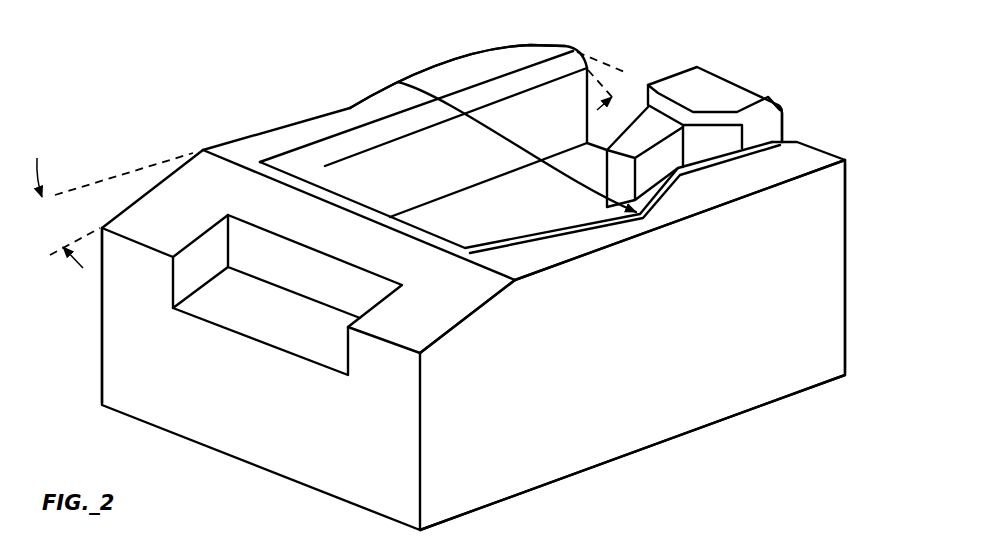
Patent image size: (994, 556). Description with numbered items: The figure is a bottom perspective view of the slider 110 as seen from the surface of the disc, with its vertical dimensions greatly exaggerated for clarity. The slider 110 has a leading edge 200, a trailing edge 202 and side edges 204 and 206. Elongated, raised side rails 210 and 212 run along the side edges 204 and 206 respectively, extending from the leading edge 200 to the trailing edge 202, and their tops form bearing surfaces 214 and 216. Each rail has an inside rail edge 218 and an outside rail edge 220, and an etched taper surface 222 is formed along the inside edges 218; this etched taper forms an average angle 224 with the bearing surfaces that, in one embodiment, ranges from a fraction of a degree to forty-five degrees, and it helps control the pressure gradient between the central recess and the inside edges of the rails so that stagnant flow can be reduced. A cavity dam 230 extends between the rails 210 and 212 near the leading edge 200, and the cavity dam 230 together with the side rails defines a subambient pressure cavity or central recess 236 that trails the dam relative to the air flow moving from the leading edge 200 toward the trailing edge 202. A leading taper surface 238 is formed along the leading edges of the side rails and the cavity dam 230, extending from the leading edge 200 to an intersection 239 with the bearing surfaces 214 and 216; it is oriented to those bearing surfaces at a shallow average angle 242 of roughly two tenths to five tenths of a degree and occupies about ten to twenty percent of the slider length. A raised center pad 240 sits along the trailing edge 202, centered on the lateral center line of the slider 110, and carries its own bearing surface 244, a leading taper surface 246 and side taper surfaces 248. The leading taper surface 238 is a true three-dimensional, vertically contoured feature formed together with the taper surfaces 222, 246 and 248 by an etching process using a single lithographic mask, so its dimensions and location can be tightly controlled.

The slider 110 is at (148, 82).
The leading edge 200 is at (300, 470).
The trailing edge 202 is at (848, 373).
The side edge 204 is at (100, 342).
The side edge 206 is at (467, 500).
The side rail 210 is at (548, 42).
The side rail 212 is at (800, 157).
The bearing surface 214 is at (308, 133).
The bearing surface 216 is at (537, 260).
The inside rail edge 218 is at (325, 168).
The outside rail edge 220 is at (470, 50).
The etched taper surface 222 is at (417, 120).
The average angle 224 is at (625, 72).
The cavity dam 230 is at (273, 265).
The subambient pressure cavity 236 is at (503, 193).
The leading taper surface 238 is at (182, 180).
The intersection 239 is at (465, 260).
The center pad 240 is at (710, 68).
The average angle 242 is at (52, 163).
The bearing surface 244 is at (740, 98).
The leading taper surface 246 is at (607, 140).
The side taper surfaces 248 is at (770, 110).